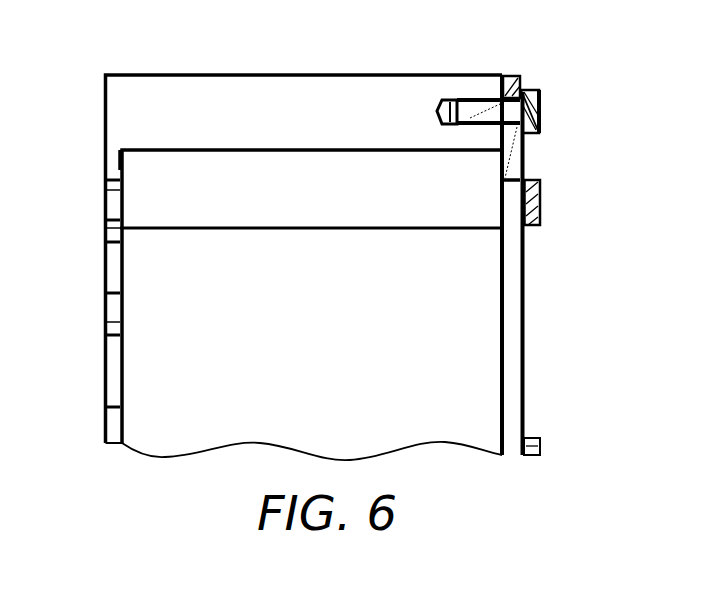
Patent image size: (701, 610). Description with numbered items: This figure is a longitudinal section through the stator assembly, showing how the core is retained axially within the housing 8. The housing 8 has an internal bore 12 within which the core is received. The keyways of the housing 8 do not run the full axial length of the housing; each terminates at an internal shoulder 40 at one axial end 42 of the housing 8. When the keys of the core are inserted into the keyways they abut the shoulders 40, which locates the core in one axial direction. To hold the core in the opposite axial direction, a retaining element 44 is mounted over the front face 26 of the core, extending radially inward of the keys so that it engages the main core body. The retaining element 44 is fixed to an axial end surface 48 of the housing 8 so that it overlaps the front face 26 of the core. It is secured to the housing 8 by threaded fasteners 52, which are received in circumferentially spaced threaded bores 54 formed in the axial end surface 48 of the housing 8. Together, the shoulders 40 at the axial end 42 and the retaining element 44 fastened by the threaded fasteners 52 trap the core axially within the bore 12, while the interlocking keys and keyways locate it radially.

The housing 8 is at (127, 74).
The internal bore 12 is at (260, 148).
The front face 26 is at (535, 205).
The internal shoulder 40 is at (124, 164).
The axial end 42 is at (105, 165).
The retaining element 44 is at (524, 88).
The axial end surface 48 is at (517, 72).
The threaded fastener 52 is at (539, 108).
The threaded bore 54 is at (452, 98).